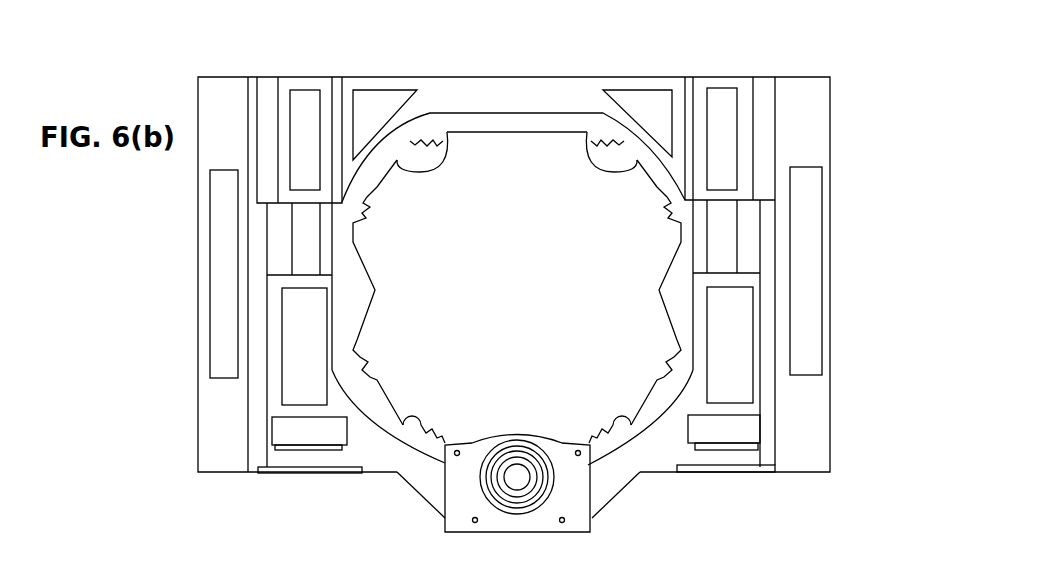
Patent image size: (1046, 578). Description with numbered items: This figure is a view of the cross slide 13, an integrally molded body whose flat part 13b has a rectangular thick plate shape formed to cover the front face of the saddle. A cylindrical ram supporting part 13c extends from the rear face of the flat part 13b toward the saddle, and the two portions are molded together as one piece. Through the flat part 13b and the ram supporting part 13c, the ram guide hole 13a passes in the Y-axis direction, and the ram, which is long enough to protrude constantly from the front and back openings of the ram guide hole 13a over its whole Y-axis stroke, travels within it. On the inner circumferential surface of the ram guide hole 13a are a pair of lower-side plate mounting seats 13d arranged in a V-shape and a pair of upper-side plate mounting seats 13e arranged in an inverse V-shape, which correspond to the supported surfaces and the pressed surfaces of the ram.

The cross slide 13 is at (835, 201).
The ram guide hole 13a is at (663, 331).
The flat part 13b is at (833, 308).
The ram supporting part 13c is at (652, 430).
The lower-side plate mounting seats 13d is at (419, 422).
The upper-side plate mounting seats 13e is at (440, 140).